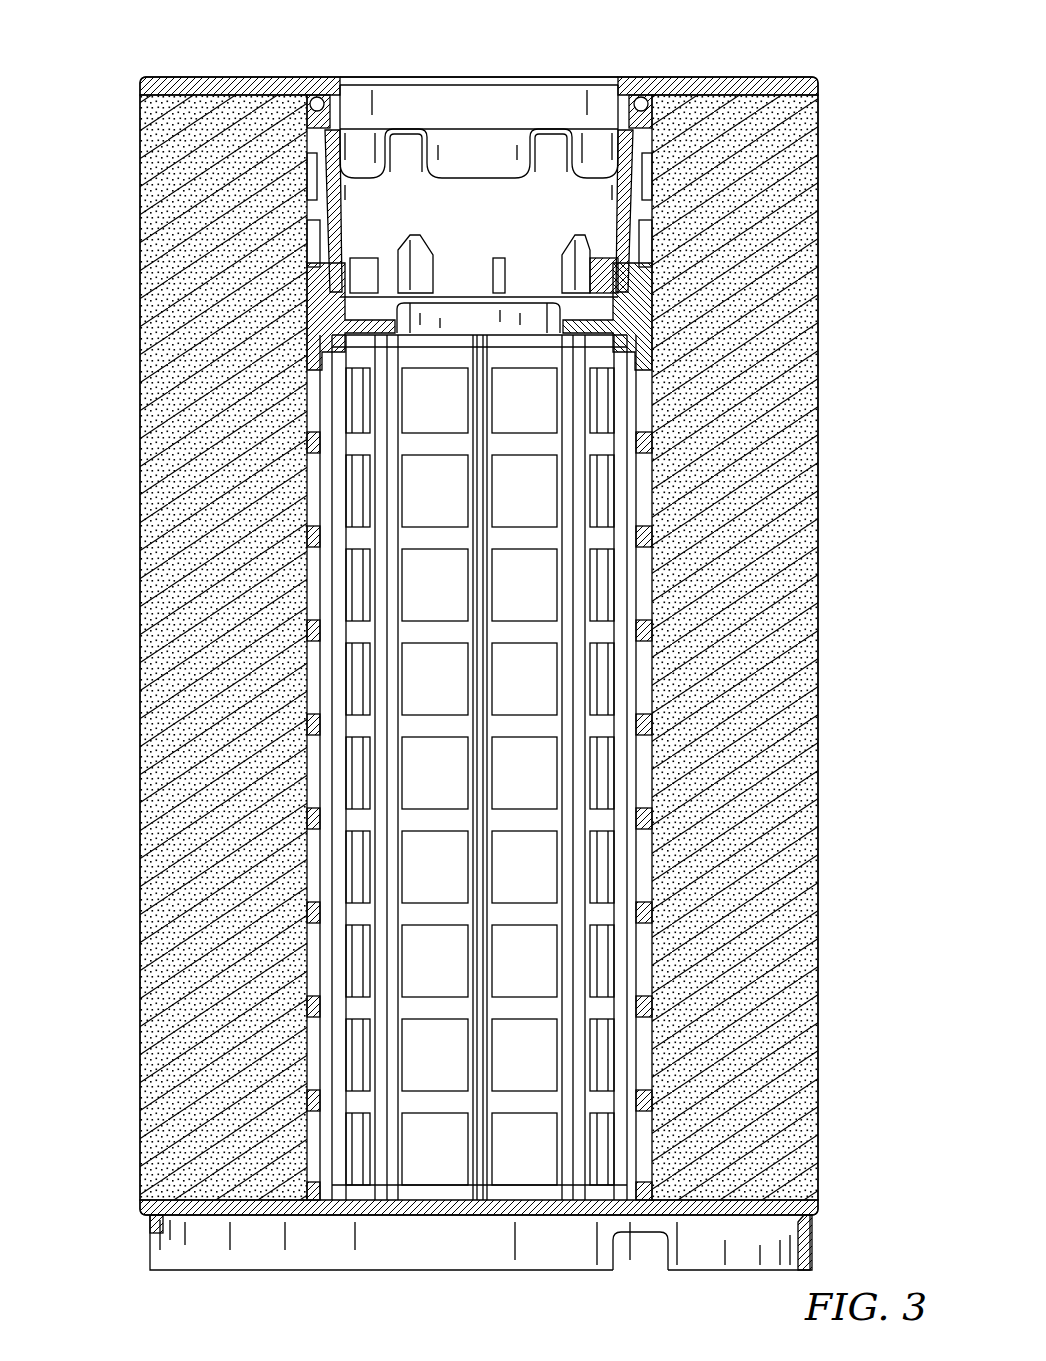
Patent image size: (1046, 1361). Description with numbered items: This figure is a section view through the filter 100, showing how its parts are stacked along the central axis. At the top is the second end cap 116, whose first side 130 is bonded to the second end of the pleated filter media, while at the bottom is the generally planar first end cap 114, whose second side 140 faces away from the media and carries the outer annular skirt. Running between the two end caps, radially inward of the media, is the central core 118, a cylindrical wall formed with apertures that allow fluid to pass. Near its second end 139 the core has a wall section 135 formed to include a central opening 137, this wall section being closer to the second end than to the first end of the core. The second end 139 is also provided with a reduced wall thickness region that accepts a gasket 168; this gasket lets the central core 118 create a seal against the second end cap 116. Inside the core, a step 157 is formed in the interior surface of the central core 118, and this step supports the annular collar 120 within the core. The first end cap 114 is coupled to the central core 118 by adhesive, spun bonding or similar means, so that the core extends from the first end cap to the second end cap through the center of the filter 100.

The filter 100 is at (866, 429).
The first end cap 114 is at (815, 1214).
The second end cap 116 is at (670, 77).
The central core 118 is at (628, 582).
The annular collar 120 is at (397, 200).
The first side 130 is at (742, 106).
The wall section 135 is at (592, 330).
The central opening 137 is at (522, 300).
The second end 139 is at (642, 147).
The second side 140 is at (567, 1223).
The step 157 is at (337, 297).
The gasket 168 is at (313, 97).